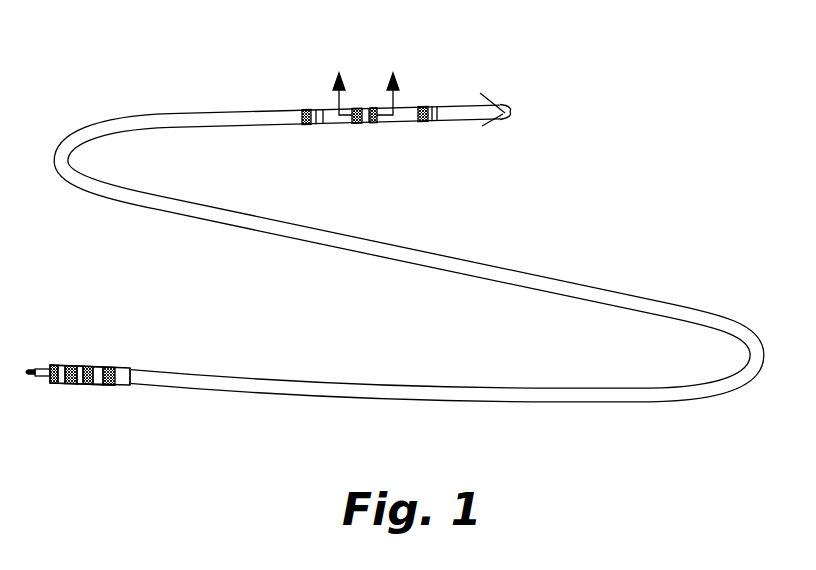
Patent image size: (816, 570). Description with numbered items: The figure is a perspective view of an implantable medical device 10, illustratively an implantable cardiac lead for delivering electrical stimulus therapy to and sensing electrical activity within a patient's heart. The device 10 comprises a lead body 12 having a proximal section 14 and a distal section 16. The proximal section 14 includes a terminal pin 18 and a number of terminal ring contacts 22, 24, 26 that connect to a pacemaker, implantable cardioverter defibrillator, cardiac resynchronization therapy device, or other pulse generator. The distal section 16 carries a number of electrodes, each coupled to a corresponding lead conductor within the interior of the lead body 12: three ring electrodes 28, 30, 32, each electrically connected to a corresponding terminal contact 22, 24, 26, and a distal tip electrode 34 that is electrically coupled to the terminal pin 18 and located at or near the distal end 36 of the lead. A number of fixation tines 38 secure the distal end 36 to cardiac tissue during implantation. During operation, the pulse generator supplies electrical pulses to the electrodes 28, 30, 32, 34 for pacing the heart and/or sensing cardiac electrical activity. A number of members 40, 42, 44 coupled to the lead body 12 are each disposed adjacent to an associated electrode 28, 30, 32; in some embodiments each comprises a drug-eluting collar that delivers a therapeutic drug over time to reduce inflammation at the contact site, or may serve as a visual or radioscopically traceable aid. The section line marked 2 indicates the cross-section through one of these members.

The implantable medical device 10 is at (628, 202).
The lead body 12 is at (491, 388).
The proximal section 14 is at (178, 411).
The distal section 16 is at (463, 78).
The terminal pin 18 is at (33, 379).
The terminal ring contact 22 is at (67, 365).
The terminal ring contact 24 is at (86, 384).
The terminal ring contact 26 is at (103, 365).
The ring electrode 28 is at (306, 108).
The ring electrode 30 is at (352, 125).
The ring electrode 32 is at (422, 125).
The distal tip electrode 34 is at (510, 118).
The distal end 36 is at (507, 106).
The fixation tines 38 is at (494, 101).
The member 40 is at (318, 126).
The member 42 is at (373, 125).
The member 44 is at (439, 105).
The section line 2- 2 is at (366, 78).